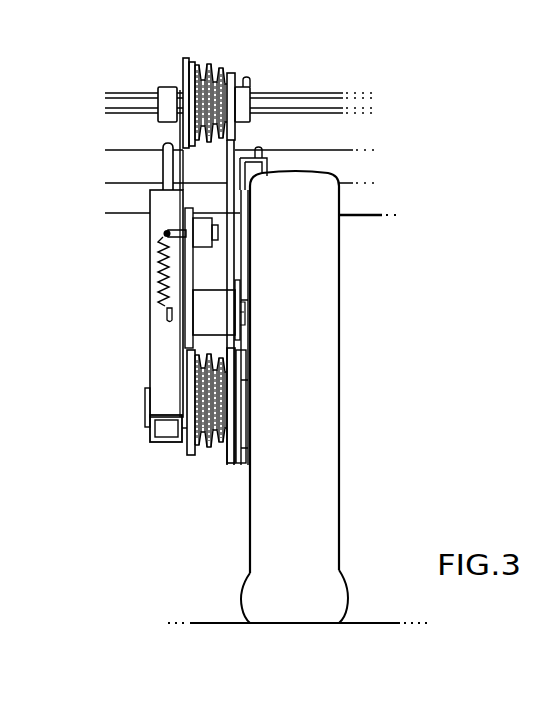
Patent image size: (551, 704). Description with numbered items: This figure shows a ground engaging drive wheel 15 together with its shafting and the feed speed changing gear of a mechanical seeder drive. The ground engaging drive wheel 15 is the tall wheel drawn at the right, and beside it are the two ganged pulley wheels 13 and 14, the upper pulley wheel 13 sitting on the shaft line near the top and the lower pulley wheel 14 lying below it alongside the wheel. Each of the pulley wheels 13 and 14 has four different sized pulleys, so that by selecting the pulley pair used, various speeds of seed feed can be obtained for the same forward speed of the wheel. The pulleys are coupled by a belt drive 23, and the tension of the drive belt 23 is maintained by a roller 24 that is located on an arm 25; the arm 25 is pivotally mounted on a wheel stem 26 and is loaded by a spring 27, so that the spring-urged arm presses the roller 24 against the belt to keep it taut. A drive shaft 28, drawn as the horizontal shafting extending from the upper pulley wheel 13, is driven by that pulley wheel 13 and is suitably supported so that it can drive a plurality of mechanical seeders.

The pulley wheel 13 is at (213, 71).
The pulley wheel 14 is at (207, 442).
The ground engaging drive wheel 15 is at (307, 408).
The belt drive 23 is at (235, 146).
The roller 24 is at (201, 329).
The arm 25 is at (187, 312).
The wheel stem 26 is at (158, 264).
The spring 27 is at (168, 303).
The drive shaft 28 is at (336, 100).